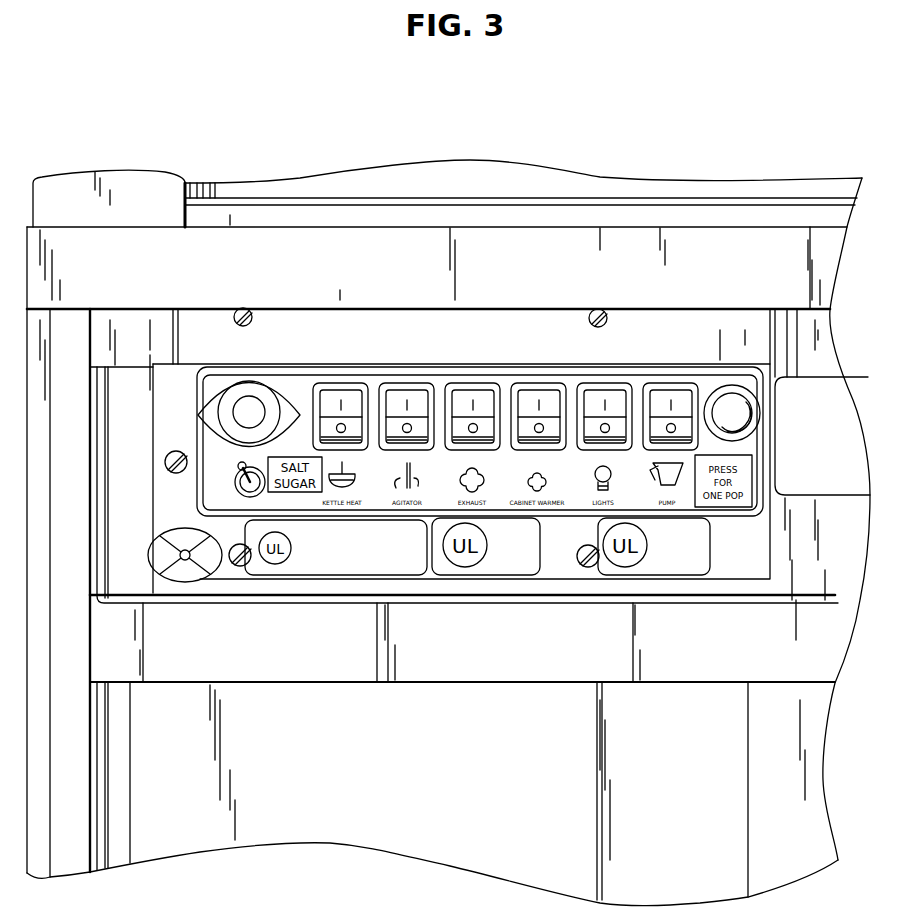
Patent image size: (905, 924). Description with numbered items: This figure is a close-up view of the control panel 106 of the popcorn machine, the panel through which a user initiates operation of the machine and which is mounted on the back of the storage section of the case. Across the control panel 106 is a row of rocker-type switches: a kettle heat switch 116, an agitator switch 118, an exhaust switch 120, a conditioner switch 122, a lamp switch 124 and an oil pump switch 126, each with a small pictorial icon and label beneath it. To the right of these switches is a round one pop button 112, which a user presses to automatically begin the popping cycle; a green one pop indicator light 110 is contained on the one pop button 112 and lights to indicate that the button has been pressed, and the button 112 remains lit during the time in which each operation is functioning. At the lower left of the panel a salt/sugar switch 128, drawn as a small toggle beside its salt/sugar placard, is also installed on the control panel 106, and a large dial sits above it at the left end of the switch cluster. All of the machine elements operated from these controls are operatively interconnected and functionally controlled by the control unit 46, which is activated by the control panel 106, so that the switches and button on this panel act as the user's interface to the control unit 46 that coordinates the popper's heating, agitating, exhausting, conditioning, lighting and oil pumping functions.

The control unit 46 is at (585, 217).
The control panel 106 is at (255, 367).
The one pop indicator light 110 is at (728, 400).
The one pop button 112 is at (752, 395).
The kettle heat switch 116 is at (322, 387).
The agitator switch 118 is at (410, 387).
The exhaust switch 120 is at (468, 387).
The conditioner switch 122 is at (525, 387).
The lamp switch 124 is at (593, 388).
The oil pump switch 126 is at (657, 387).
The salt/sugar switch 128 is at (237, 472).